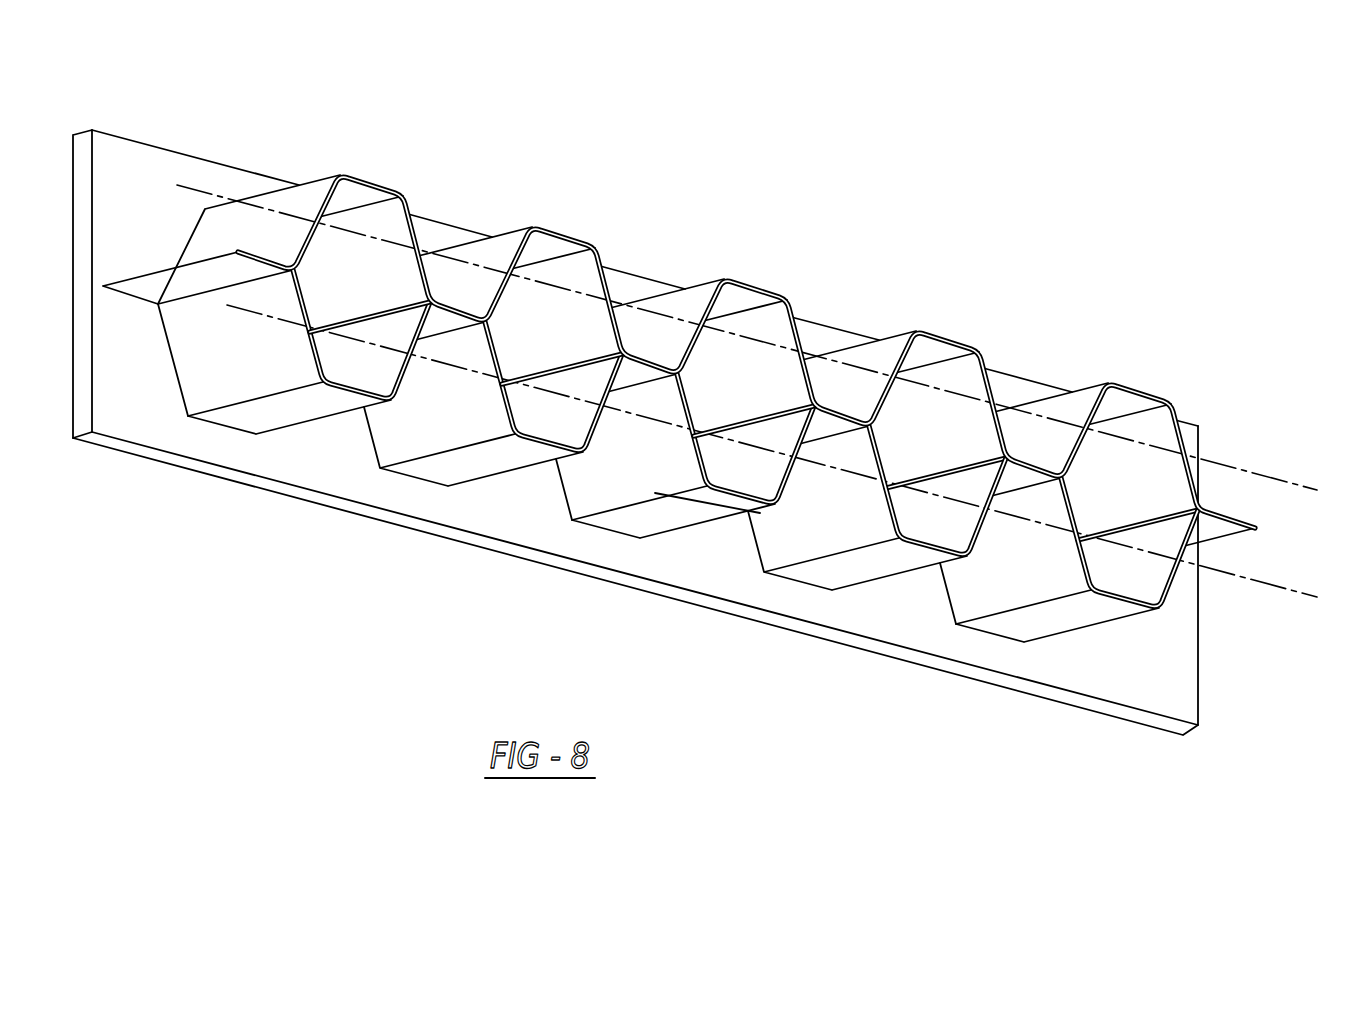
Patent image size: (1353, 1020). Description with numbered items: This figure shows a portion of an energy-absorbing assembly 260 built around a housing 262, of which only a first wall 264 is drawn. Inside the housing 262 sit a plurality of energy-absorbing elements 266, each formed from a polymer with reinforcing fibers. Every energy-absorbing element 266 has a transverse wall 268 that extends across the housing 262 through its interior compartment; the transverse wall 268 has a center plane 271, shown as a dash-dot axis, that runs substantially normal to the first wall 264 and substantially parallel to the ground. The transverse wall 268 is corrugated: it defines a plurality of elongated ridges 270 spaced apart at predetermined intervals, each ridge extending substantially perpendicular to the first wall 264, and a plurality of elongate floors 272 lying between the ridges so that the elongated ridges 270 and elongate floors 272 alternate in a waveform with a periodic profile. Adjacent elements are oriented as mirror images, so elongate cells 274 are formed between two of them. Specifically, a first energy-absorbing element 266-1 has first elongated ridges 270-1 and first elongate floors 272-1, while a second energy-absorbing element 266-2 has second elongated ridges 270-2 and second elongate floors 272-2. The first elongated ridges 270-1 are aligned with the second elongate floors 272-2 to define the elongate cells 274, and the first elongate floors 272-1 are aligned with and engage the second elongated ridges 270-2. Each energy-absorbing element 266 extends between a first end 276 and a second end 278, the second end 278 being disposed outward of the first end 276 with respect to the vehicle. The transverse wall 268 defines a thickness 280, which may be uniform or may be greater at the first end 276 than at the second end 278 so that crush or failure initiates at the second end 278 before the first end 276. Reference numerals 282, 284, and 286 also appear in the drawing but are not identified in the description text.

The energy-absorbing assembly 260 is at (1133, 185).
The housing 262 is at (1194, 417).
The first wall 264 is at (1173, 708).
The energy-absorbing element 266 is at (720, 437).
The first energy-absorbing element 266-1 is at (252, 222).
The second energy-absorbing element 266-2 is at (213, 377).
The transverse wall 268 is at (1150, 395).
The elongated ridge 270 is at (776, 319).
The first elongated ridge 270-1 is at (370, 170).
The second elongated ridge 270-2 is at (287, 425).
The center plane 271 is at (1318, 488).
The elongate floor 272 is at (1050, 450).
The first elongate floor 272-1 is at (155, 283).
The second elongate floor 272-2 is at (138, 283).
The elongate cell 274 is at (714, 373).
The first end 276 is at (1053, 648).
The second end 278 is at (1189, 592).
The thickness 280 is at (935, 505).
The bend 282 is at (733, 495).
The angled wall 284 is at (697, 450).
The junction 286 is at (750, 484).